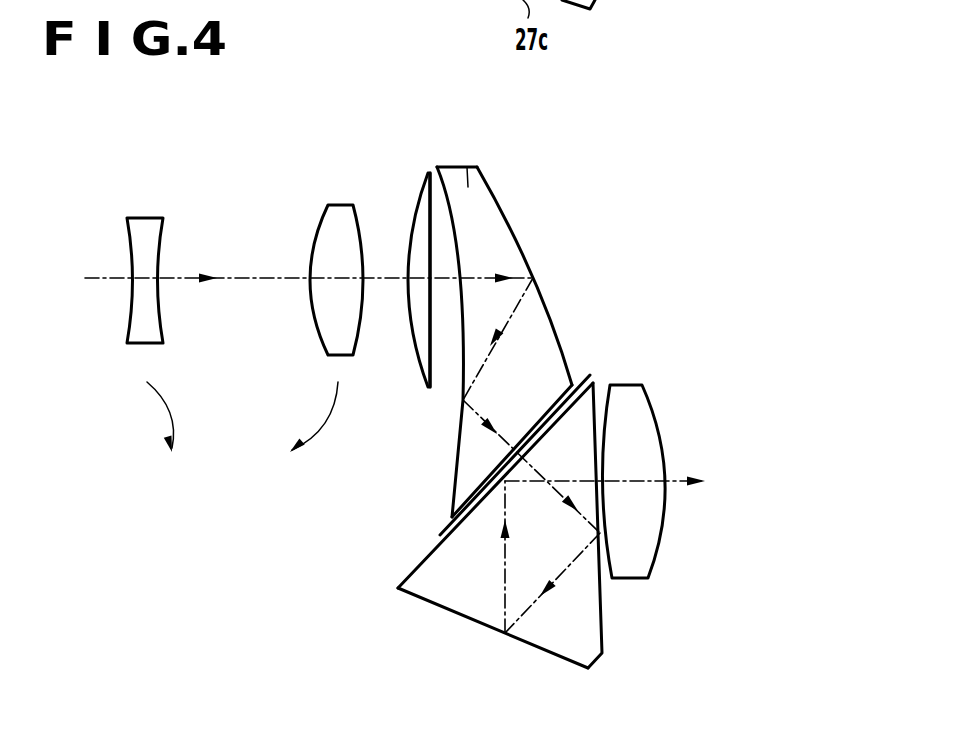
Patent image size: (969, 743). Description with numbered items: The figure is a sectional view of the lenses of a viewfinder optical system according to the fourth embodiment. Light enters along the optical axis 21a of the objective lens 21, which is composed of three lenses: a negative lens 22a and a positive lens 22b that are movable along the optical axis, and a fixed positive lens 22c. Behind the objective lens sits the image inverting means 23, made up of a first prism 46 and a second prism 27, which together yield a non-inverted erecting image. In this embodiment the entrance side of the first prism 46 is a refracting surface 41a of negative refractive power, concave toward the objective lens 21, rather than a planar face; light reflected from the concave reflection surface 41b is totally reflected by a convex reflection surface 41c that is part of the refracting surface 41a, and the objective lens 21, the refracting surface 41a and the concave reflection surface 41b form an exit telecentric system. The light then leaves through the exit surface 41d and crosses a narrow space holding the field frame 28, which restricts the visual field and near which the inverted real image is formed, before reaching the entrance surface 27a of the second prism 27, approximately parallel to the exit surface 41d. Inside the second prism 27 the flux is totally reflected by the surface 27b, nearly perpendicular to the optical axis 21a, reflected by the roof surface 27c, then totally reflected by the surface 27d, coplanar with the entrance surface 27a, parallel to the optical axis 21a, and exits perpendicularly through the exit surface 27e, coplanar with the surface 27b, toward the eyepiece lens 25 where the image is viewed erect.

The objective lens 21 is at (430, 147).
The optical axis 21a is at (100, 282).
The negative lens 22a is at (145, 217).
The positive lens 22b is at (320, 222).
The fixed positive lens 22c is at (412, 237).
The image inverting means 23 is at (499, 172).
The eyepiece lens 25 is at (640, 420).
The second prism 27 is at (524, 548).
The entrance surface 27a is at (450, 485).
The total reflection surface 27b is at (664, 525).
The roof surface 27c is at (535, 655).
The total reflection surface 27d is at (433, 550).
The exit surface 27e is at (605, 630).
The field frame 28 is at (592, 368).
The refracting surface 41a is at (447, 295).
The concave reflection surface 41b is at (515, 207).
The convex reflection surface 41c is at (448, 182).
The exit surface 41d is at (562, 350).
The first prism 46 is at (468, 166).